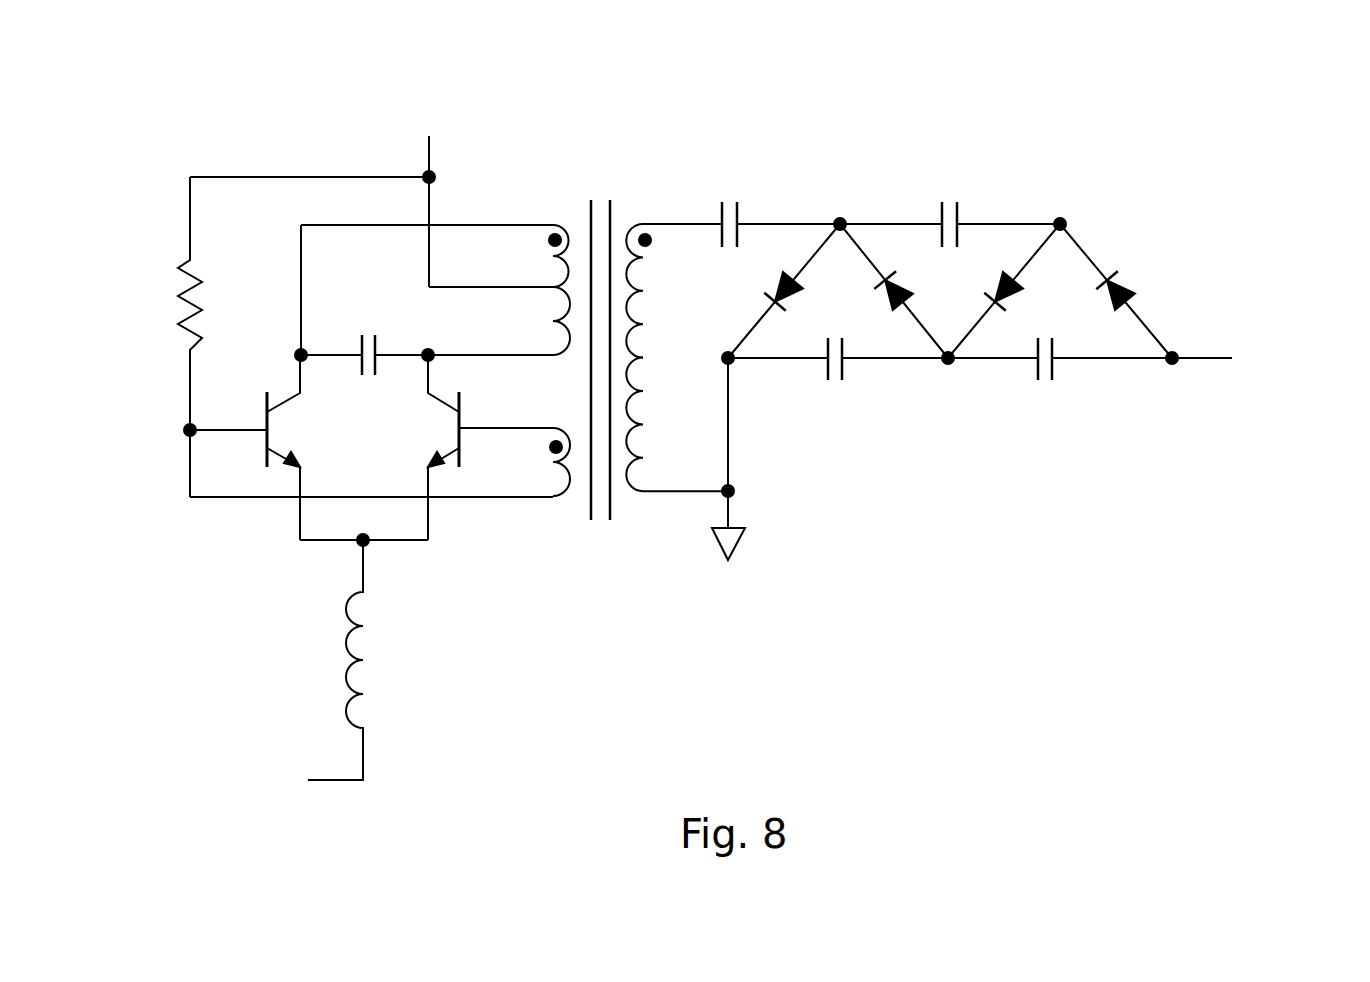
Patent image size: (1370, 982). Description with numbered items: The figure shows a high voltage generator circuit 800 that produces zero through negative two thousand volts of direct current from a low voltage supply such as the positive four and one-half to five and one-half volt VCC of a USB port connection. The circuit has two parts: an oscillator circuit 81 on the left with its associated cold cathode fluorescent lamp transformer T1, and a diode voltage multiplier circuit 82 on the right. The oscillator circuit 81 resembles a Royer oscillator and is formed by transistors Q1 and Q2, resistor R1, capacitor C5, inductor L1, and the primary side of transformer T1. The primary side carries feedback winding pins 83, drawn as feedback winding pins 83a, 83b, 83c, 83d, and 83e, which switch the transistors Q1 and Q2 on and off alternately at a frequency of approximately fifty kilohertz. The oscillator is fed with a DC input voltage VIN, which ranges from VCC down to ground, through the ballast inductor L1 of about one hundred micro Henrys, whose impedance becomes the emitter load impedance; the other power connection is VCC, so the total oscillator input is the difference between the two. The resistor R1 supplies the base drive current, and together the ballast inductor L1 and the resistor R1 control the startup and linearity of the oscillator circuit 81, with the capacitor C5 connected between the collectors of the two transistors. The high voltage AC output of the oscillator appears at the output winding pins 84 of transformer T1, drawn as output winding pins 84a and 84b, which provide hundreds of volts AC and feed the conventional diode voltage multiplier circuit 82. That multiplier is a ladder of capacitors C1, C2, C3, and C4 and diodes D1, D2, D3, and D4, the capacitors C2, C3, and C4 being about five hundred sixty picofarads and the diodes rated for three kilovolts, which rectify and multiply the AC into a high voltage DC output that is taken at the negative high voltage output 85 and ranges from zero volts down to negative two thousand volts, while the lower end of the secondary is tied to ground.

The high voltage generator circuit 800 is at (748, 73).
The oscillator circuit 81 is at (560, 788).
The diode voltage multiplier circuit 82 is at (1228, 578).
The feedback winding pins 83 is at (530, 172).
The feedback winding pin 83a is at (435, 227).
The feedback winding pin 83b is at (499, 288).
The feedback winding pin 83c is at (499, 338).
The feedback winding pin 83d is at (514, 432).
The feedback winding pin 83e is at (380, 479).
The output winding pins 84 is at (657, 165).
The output winding pin 84a is at (658, 278).
The output winding pin 84b is at (680, 427).
The negative high voltage output 85 is at (1262, 335).
The resistor R1 is at (209, 337).
The capacitor C5 is at (364, 338).
The transistor Q1 is at (265, 447).
The transistor Q2 is at (463, 447).
The ballast inductor L1 is at (350, 660).
The transformer T1 is at (597, 342).
The capacitor C1 is at (725, 208).
The capacitor C2 is at (832, 381).
The capacitor C3 is at (944, 208).
The capacitor C4 is at (1043, 381).
The diode D1 is at (784, 291).
The diode D2 is at (894, 291).
The diode D3 is at (1004, 291).
The diode D4 is at (1116, 291).